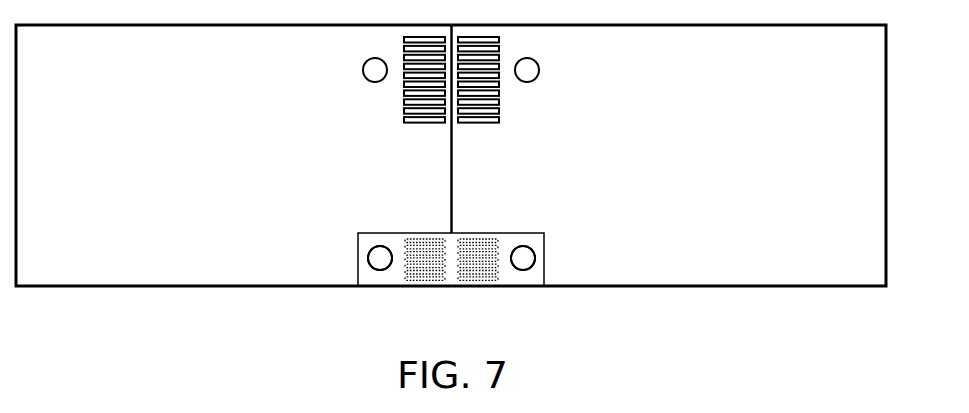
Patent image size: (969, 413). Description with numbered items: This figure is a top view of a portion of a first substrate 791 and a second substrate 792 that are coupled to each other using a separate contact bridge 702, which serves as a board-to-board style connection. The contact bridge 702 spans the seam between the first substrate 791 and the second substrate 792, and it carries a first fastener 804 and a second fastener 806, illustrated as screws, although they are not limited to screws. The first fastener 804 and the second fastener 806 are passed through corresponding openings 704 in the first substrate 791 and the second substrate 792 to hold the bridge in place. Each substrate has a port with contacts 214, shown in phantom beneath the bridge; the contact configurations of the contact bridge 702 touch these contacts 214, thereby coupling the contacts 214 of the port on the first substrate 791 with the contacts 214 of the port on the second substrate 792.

The first substrate 791 is at (234, 155).
The second substrate 792 is at (669, 155).
The contact bridge 702 is at (432, 232).
The contacts 214 is at (478, 250).
The openings 704 is at (368, 268).
The first fastener 804 is at (380, 258).
The second fastener 806 is at (523, 258).